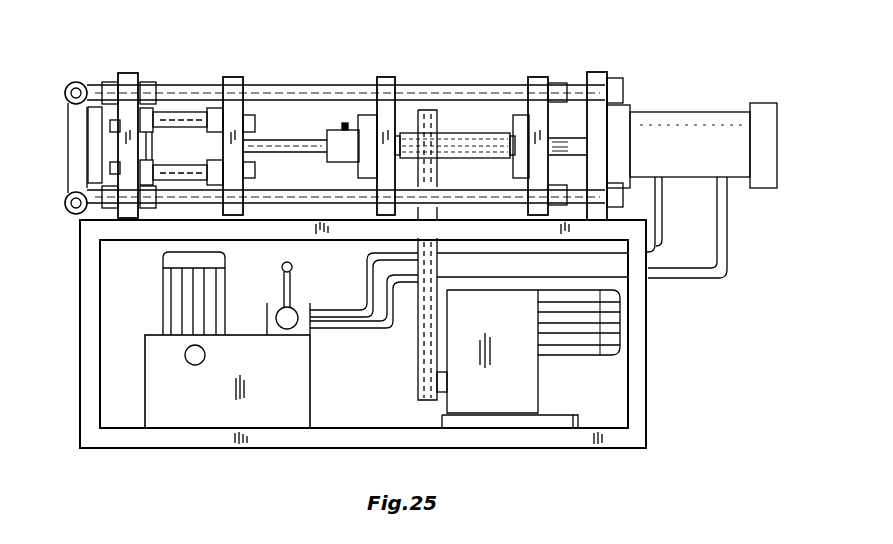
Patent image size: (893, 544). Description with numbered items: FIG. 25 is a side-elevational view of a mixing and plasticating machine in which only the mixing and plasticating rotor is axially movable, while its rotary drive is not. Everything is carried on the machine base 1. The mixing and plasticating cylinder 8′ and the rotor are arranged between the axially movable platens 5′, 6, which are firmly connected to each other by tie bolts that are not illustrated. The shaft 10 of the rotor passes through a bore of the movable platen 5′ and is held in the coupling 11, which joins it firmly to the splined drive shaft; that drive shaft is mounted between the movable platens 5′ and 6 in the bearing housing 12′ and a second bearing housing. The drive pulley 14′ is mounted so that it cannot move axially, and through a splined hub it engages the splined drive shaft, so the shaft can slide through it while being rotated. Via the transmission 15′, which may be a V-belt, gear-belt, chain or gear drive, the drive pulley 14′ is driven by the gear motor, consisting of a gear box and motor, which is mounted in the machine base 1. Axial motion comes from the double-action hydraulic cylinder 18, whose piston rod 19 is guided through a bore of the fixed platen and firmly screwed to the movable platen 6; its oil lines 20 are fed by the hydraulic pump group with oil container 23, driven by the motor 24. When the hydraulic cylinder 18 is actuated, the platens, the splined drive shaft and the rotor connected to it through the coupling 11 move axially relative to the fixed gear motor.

The machine base 1 is at (213, 228).
The axially movable platen 5′ is at (391, 92).
The axially movable platen 6 is at (540, 95).
The mixing and plasticating cylinder 8′ is at (185, 112).
The shaft of the mixing and plasticating rotor 10 is at (303, 147).
The coupling 11 is at (347, 141).
The bearing housing 12′ is at (362, 168).
The drive pulley 14′ is at (426, 125).
The transmission 15′ is at (434, 340).
The hydraulic cylinder 18 is at (695, 143).
The piston rod 19 is at (580, 140).
The oil lines 20 is at (362, 307).
The hydraulic pump group with oil container 23 is at (258, 357).
The motor of the hydraulic pump group 24 is at (180, 325).